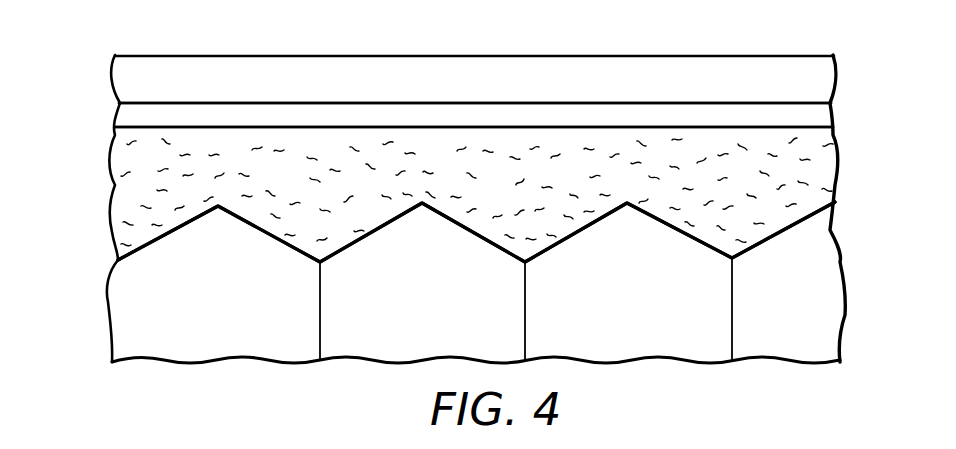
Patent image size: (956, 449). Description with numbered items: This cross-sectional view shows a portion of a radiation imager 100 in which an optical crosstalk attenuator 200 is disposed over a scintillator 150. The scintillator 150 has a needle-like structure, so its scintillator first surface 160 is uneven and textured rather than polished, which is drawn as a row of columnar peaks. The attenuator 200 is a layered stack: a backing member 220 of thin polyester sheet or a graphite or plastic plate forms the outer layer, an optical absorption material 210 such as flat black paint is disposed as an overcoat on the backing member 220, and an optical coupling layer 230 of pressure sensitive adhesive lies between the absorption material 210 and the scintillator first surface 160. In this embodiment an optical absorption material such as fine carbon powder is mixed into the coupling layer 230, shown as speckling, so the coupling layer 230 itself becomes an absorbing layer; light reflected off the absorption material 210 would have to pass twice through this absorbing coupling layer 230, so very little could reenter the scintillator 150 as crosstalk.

The imager 100 is at (453, 31).
The optical crosstalk attenuator 200 is at (853, 48).
The backing member 220 is at (115, 57).
The optical absorption material 210 is at (118, 104).
The optical coupling layer 230 is at (116, 184).
The scintillator first surface 160 is at (676, 218).
The scintillator 150 is at (269, 304).